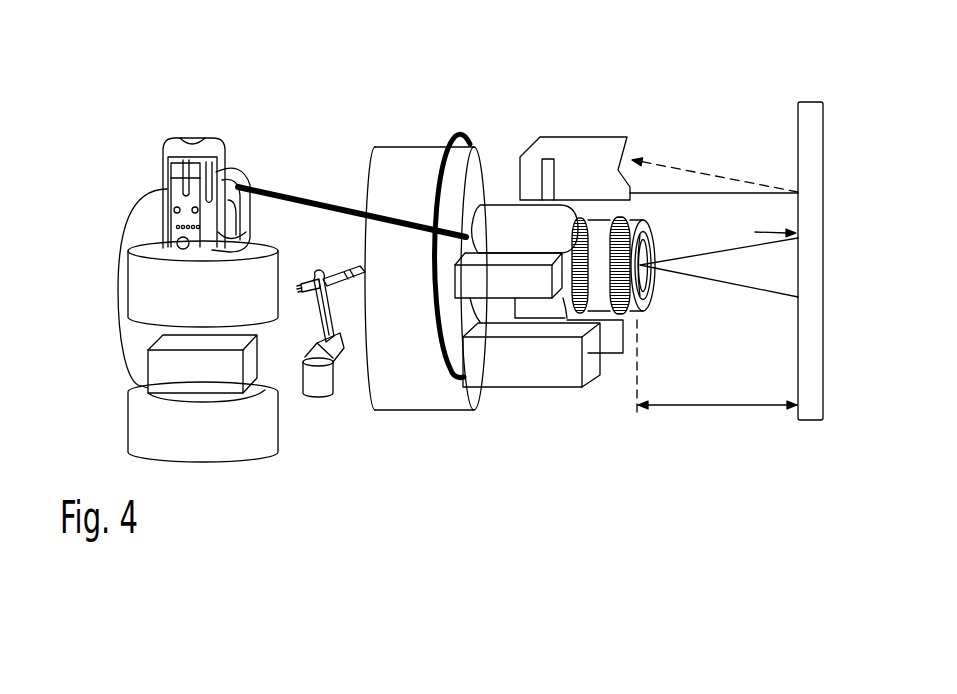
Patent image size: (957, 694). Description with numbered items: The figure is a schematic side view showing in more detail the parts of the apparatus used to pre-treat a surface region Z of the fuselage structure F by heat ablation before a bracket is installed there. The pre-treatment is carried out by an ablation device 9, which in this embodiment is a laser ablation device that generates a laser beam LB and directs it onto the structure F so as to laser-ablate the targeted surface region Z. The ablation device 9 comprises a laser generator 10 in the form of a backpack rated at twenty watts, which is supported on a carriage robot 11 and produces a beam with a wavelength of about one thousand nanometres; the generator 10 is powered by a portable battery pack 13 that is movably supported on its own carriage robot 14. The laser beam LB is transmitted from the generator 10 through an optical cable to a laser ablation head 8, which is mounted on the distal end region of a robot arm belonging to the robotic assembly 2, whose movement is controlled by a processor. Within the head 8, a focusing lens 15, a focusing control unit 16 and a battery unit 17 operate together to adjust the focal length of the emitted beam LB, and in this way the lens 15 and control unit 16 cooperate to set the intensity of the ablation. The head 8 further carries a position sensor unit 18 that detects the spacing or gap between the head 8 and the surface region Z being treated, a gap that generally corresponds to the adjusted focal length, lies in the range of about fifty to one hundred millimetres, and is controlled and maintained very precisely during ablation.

The robotic assembly 2 is at (319, 425).
The laser ablation head 8 is at (380, 117).
The ablation device 9 is at (190, 92).
The laser generator 10 is at (165, 132).
The carriage robot 11 is at (212, 305).
The portable battery pack 13 is at (212, 385).
The carriage robot 14 is at (212, 446).
The focusing lens 15 is at (662, 318).
The focusing control unit 16 is at (531, 377).
The battery unit 17 is at (514, 294).
The position sensor unit 18 is at (618, 125).
The fuselage structure F is at (810, 157).
The surface region Z is at (755, 232).
The laser beam LB is at (762, 294).